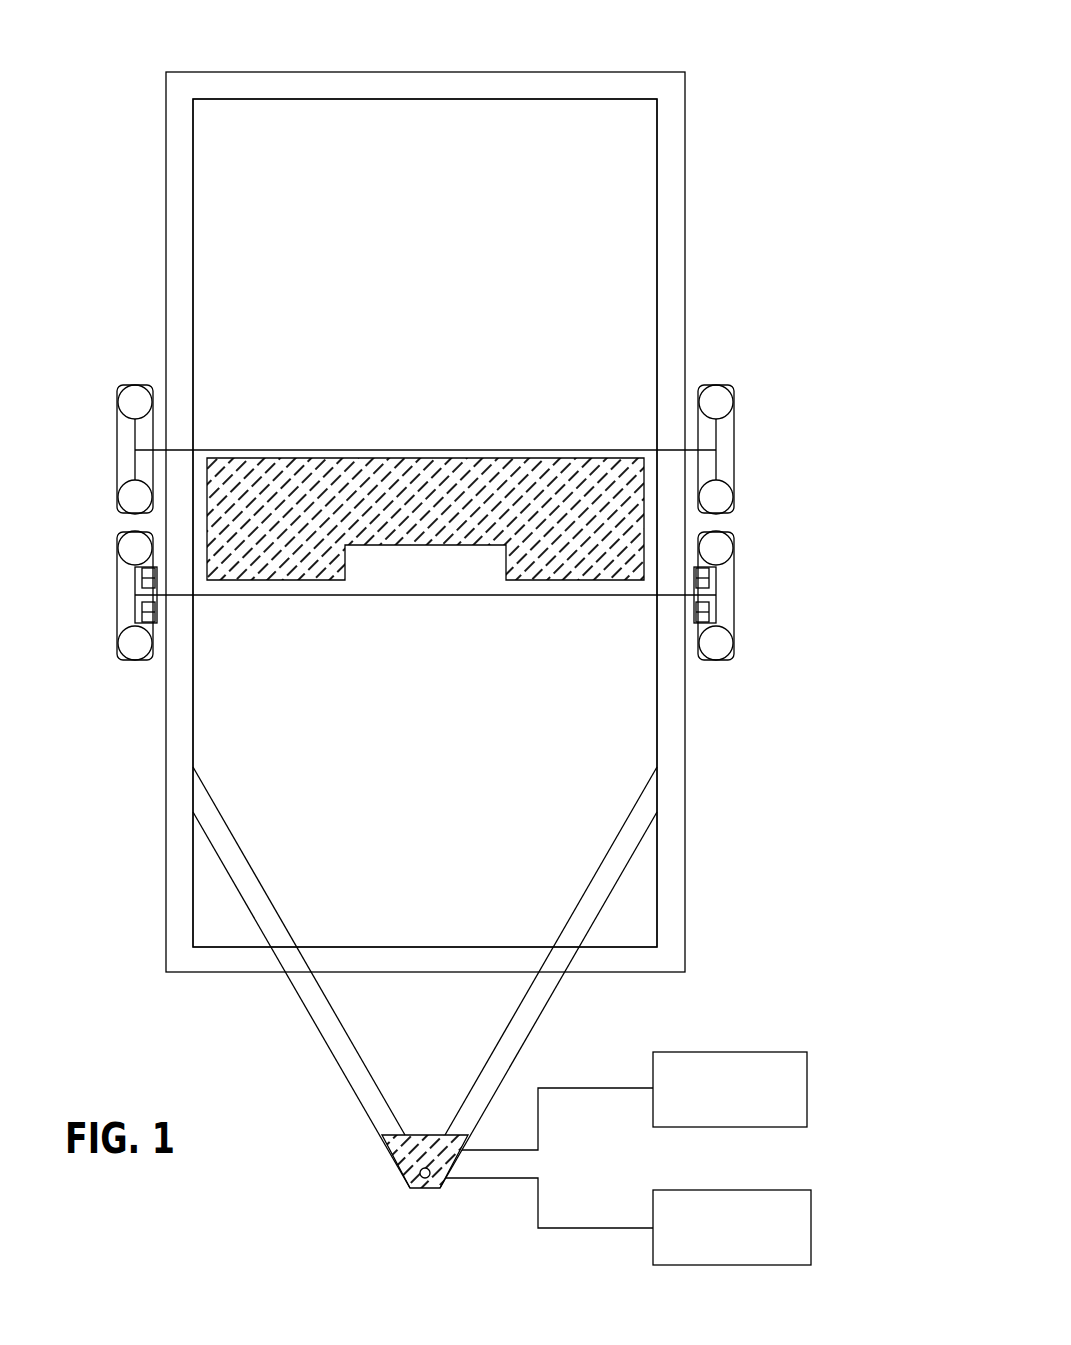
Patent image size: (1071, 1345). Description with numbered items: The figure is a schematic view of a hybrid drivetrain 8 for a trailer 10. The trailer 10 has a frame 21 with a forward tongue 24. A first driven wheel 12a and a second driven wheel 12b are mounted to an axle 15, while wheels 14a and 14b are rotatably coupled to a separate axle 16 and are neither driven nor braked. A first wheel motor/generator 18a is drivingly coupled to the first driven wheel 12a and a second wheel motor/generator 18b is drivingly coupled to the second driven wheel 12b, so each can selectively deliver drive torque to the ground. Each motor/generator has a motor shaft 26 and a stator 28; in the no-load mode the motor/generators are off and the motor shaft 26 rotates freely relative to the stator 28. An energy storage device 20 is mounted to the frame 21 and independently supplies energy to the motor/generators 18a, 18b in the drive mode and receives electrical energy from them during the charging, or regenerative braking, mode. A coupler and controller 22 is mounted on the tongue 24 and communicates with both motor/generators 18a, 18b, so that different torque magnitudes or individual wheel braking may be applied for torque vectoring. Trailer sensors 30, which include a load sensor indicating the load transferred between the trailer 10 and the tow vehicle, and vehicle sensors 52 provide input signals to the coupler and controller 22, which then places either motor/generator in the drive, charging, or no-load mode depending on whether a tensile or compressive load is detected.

The drivetrain 8 is at (255, 662).
The trailer 10 is at (738, 98).
The first driven wheel 12a is at (727, 668).
The second driven wheel 12b is at (130, 650).
The wheel 14a is at (725, 398).
The wheel 14b is at (130, 402).
The axle 15 is at (422, 602).
The axle 16 is at (583, 448).
The first wheel motor/generator 18a is at (701, 609).
The second wheel motor/generator 18b is at (147, 608).
The energy storage device 20 is at (417, 473).
The frame 21 is at (672, 335).
The coupler and controller 22 is at (428, 1182).
The tongue 24 is at (373, 1103).
The motor shaft 26 is at (712, 585).
The stator 28 is at (716, 586).
The trailer sensors 30 is at (774, 1053).
The vehicle sensors 52 is at (793, 1200).